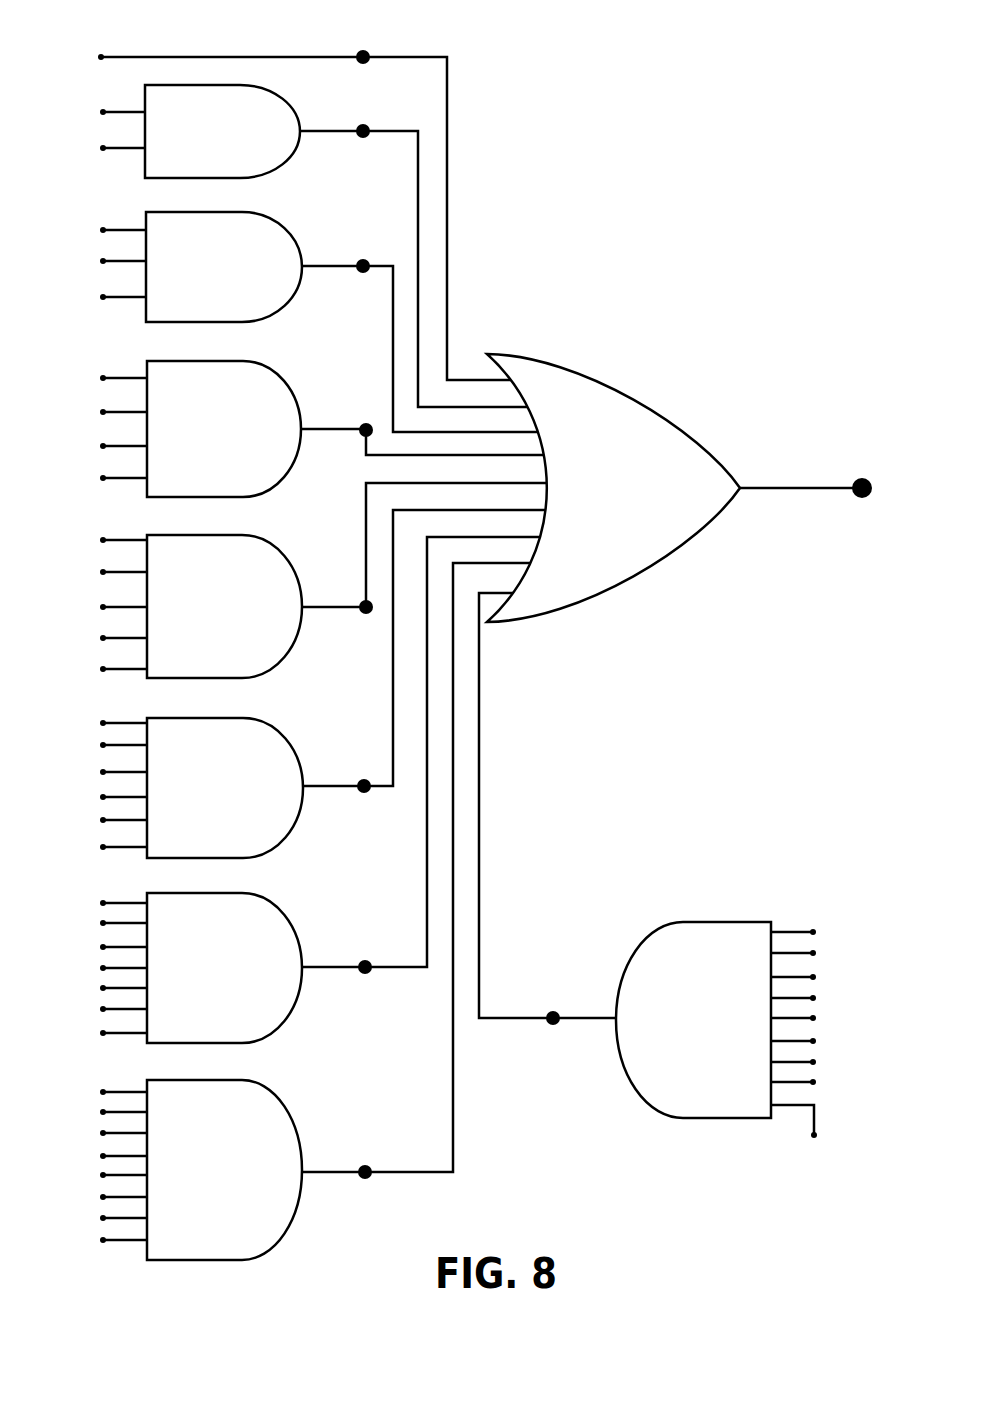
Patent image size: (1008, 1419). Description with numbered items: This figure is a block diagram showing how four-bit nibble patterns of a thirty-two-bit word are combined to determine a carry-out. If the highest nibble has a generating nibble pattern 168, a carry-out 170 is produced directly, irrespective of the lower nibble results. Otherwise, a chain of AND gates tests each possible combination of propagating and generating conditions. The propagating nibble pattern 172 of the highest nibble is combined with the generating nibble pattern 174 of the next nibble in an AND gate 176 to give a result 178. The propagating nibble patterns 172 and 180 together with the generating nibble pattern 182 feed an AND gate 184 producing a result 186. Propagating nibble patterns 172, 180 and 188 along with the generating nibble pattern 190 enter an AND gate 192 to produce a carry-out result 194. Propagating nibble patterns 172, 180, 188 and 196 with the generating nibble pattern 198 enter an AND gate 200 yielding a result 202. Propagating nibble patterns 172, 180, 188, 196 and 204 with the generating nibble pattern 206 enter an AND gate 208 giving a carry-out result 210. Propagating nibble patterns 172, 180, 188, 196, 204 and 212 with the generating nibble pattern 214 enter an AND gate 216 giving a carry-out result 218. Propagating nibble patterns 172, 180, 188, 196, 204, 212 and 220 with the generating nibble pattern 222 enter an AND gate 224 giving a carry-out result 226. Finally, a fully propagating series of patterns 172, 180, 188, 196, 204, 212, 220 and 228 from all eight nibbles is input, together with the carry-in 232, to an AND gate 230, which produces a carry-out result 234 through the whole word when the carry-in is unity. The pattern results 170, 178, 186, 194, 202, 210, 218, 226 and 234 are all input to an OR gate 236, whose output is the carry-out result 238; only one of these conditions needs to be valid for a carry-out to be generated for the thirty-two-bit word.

The generating nibble pattern T^nG_7 168 is at (100, 58).
The carry-out 170 is at (366, 50).
The propagating nibble pattern T^4_7 172 is at (100, 112).
The generating nibble pattern T^nG_6 174 is at (100, 148).
The AND gate 176 is at (292, 113).
The result 178 is at (363, 138).
The propagating nibble pattern T^4_6 180 is at (100, 261).
The generating nibble pattern T^nG_5 182 is at (100, 297).
The AND gate 184 is at (294, 244).
The result 186 is at (363, 273).
The propagating nibble pattern T^4_5 188 is at (100, 446).
The generating nibble pattern T^nG_4 190 is at (100, 478).
The AND gate 192 is at (291, 385).
The carry-out result 194 is at (376, 405).
The propagating nibble pattern T^4_4 196 is at (100, 638).
The generating nibble pattern T^nG_3 198 is at (100, 669).
The AND gate 200 is at (290, 565).
The result 202 is at (366, 614).
The propagating nibble pattern T^4_3 204 is at (100, 820).
The generating nibble pattern T^nG_2 206 is at (100, 847).
The AND gate 208 is at (292, 750).
The carry-out result 210 is at (361, 793).
The propagating nibble pattern T^4_2 212 is at (100, 1009).
The generating nibble pattern T^nG_1 214 is at (100, 1033).
The AND gate 216 is at (292, 925).
The carry-out result 218 is at (366, 974).
The propagating nibble pattern T^4_1 220 is at (100, 1218).
The generating nibble pattern T^nG_0 222 is at (100, 1240).
The AND gate 224 is at (292, 1118).
The carry-out result 226 is at (366, 1179).
The propagating nibble pattern T^4_0 228 is at (816, 1082).
The AND gate 230 is at (657, 925).
The carry-in 232 is at (817, 1137).
The carry-out result 234 is at (554, 1011).
The OR gate 236 is at (573, 363).
The carry-out result 238 is at (857, 475).